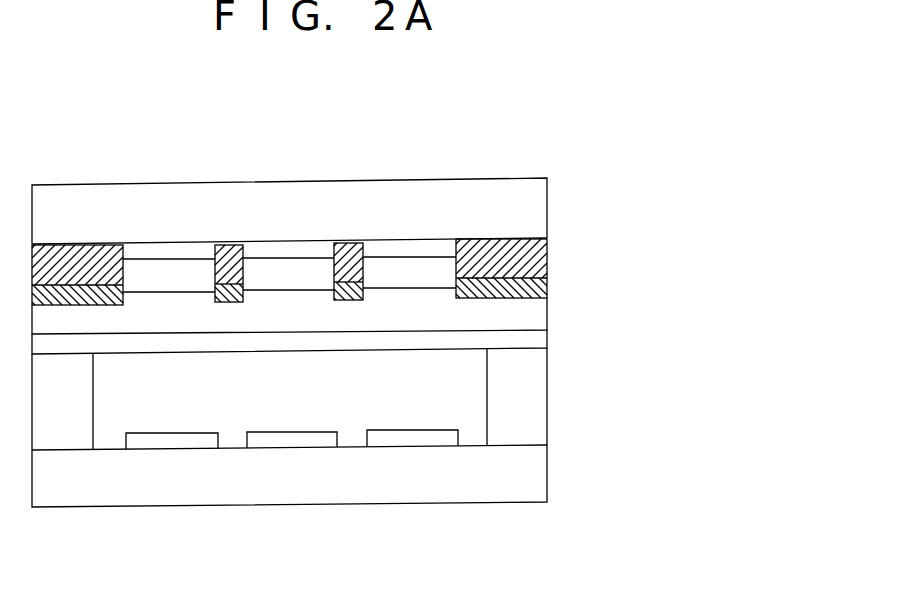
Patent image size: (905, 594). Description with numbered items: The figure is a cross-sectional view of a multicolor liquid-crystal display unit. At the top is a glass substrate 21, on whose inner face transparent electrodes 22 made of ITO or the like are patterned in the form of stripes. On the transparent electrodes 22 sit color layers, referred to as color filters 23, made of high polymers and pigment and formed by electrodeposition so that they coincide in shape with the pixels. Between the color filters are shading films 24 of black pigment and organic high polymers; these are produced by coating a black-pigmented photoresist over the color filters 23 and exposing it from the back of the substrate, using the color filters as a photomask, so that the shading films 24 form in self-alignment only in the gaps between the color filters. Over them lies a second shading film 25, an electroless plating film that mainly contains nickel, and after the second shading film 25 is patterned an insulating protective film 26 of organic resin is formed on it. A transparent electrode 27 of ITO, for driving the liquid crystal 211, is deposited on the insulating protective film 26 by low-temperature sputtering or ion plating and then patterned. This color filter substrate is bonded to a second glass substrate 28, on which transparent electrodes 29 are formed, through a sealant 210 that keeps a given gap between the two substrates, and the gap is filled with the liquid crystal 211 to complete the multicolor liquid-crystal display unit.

The glass substrate 21 is at (147, 204).
The transparent electrode 22 is at (162, 250).
The color layers (color filters) 23 is at (267, 274).
The shading films 24 is at (527, 237).
The second shading film 25 is at (541, 290).
The insulating protective film 26 is at (541, 319).
The transparent electrode 27 is at (541, 342).
The sealant 210 is at (541, 378).
The liquid crystal 211 is at (367, 397).
The transparent electrodes 29 is at (403, 440).
The second glass substrate 28 is at (332, 483).